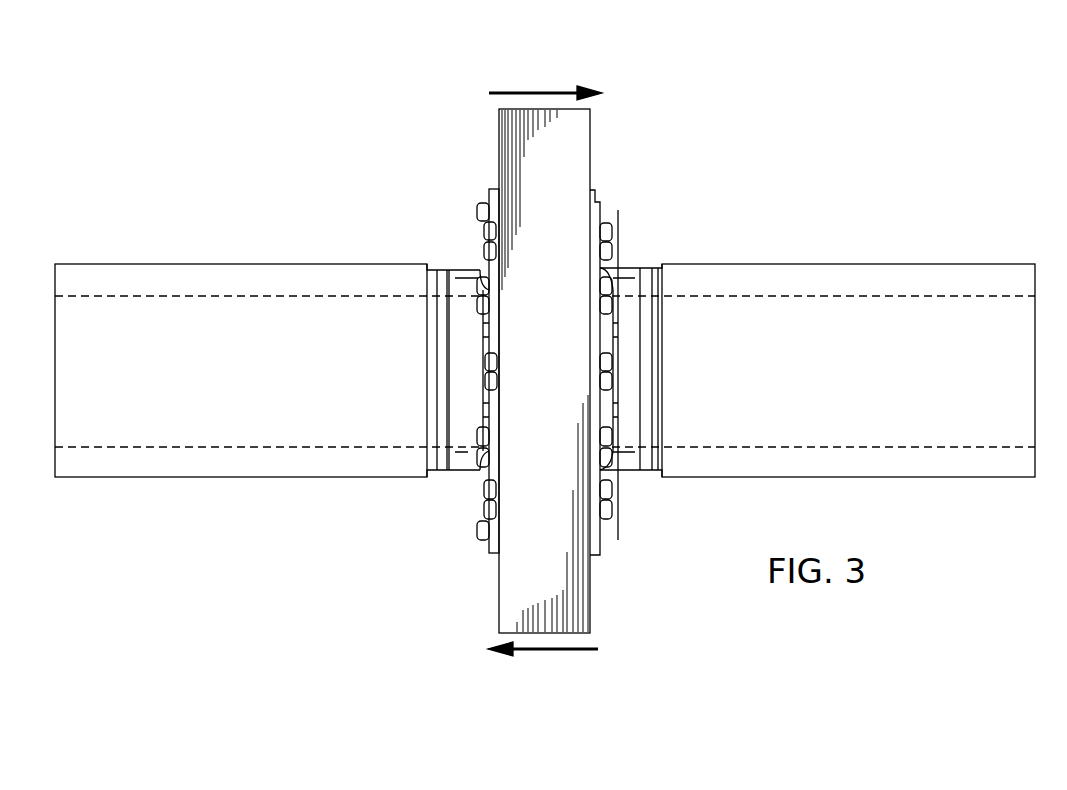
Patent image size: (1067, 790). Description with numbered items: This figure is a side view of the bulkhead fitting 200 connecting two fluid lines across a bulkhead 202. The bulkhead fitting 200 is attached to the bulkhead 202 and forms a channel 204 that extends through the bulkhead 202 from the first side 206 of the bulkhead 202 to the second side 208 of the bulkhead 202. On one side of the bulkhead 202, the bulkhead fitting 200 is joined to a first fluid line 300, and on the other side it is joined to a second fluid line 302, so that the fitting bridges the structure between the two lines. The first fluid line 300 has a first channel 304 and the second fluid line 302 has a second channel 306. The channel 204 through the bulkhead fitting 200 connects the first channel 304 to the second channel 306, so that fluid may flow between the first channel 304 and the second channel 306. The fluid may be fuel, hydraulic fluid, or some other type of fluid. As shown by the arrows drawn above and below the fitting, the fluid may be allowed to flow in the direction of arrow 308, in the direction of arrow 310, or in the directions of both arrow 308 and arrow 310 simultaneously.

The bulkhead fitting 200 is at (576, 371).
The bulkhead 202 is at (490, 155).
The channel 204 is at (628, 396).
The first side 206 is at (499, 583).
The second side 208 is at (591, 583).
The first fluid line 300 is at (241, 264).
The second fluid line 302 is at (848, 264).
The first channel 304 is at (220, 386).
The second channel 306 is at (828, 386).
The arrow 308 is at (534, 90).
The arrow 310 is at (553, 653).